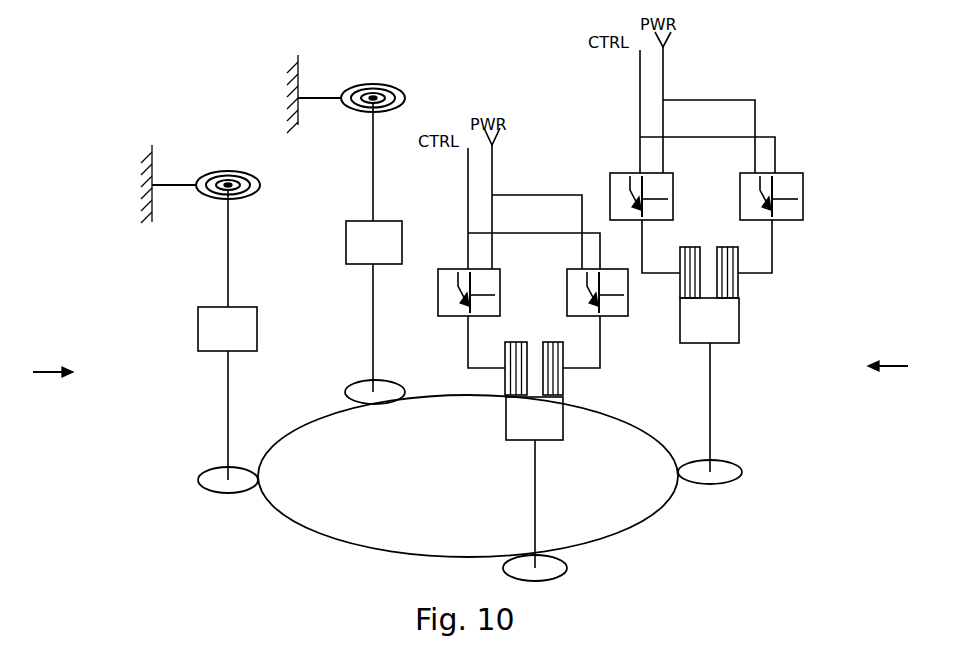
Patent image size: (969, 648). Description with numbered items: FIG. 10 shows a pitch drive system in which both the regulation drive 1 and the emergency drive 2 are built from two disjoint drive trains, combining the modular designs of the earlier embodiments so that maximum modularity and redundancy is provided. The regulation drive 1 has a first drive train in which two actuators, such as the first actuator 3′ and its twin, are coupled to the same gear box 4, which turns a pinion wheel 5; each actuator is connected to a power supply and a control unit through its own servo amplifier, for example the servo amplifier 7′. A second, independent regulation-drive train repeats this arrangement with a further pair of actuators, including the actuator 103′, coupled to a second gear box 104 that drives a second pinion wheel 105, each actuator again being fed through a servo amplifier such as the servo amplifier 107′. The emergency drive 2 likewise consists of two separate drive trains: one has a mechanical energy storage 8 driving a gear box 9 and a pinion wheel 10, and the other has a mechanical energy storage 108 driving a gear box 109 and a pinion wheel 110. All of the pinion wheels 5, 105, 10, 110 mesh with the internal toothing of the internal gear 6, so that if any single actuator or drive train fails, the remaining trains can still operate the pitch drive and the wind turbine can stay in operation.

The regulation drive 1 is at (897, 367).
The emergency drive 2 is at (44, 373).
The first actuator 3′ is at (565, 378).
The gear box 4 is at (565, 440).
The pinion wheel 5 is at (567, 565).
The internal gear 6 is at (655, 515).
The servo amplifier 7′ is at (612, 316).
The mechanical energy storage 8 is at (232, 197).
The gear box 9 is at (197, 318).
The pinion wheel 10 is at (199, 478).
The actuator 103′ is at (738, 292).
The gear box 104 is at (739, 322).
The pinion wheel 105 is at (742, 462).
The servo amplifier 107′ is at (803, 185).
The mechanical energy storage 108 is at (393, 80).
The gear box 109 is at (360, 266).
The pinion wheel 110 is at (355, 404).